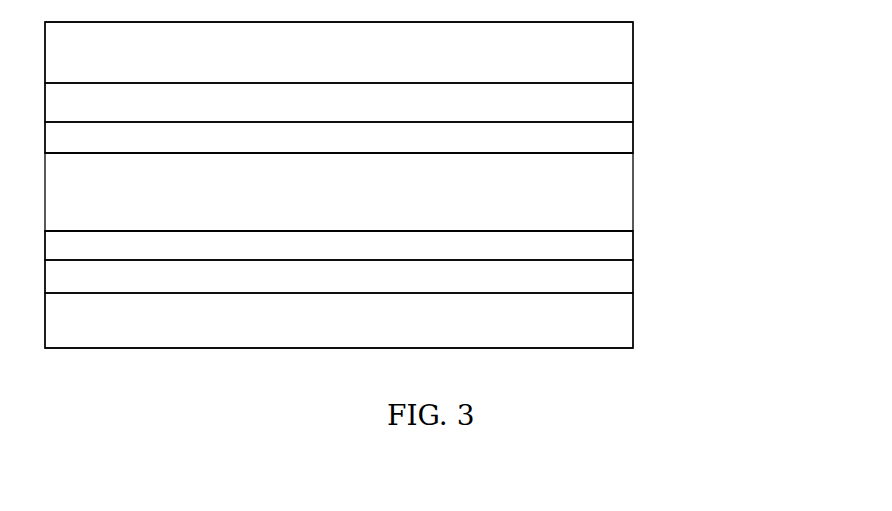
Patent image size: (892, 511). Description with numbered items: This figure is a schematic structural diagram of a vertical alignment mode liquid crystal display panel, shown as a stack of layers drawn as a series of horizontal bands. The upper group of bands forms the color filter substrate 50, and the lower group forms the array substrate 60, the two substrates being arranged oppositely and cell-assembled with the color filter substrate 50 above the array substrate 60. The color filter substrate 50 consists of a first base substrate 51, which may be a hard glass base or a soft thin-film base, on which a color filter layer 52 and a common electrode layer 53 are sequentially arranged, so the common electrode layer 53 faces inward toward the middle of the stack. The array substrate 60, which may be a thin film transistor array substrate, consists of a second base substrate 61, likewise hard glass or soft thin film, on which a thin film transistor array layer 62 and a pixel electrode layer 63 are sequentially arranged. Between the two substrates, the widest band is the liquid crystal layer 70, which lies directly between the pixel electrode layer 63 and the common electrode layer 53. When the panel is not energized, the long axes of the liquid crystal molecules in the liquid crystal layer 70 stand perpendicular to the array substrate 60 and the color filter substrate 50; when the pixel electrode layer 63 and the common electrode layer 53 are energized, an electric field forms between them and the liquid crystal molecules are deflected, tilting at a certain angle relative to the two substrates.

The color filter substrate 50 is at (746, 57).
The first base substrate 51 is at (633, 53).
The color filter layer 52 is at (633, 102).
The common electrode layer 53 is at (633, 138).
The liquid crystal layer 70 is at (633, 192).
The array substrate 60 is at (746, 237).
The second base substrate 61 is at (633, 320).
The thin film transistor array layer 62 is at (633, 277).
The pixel electrode layer 63 is at (633, 243).